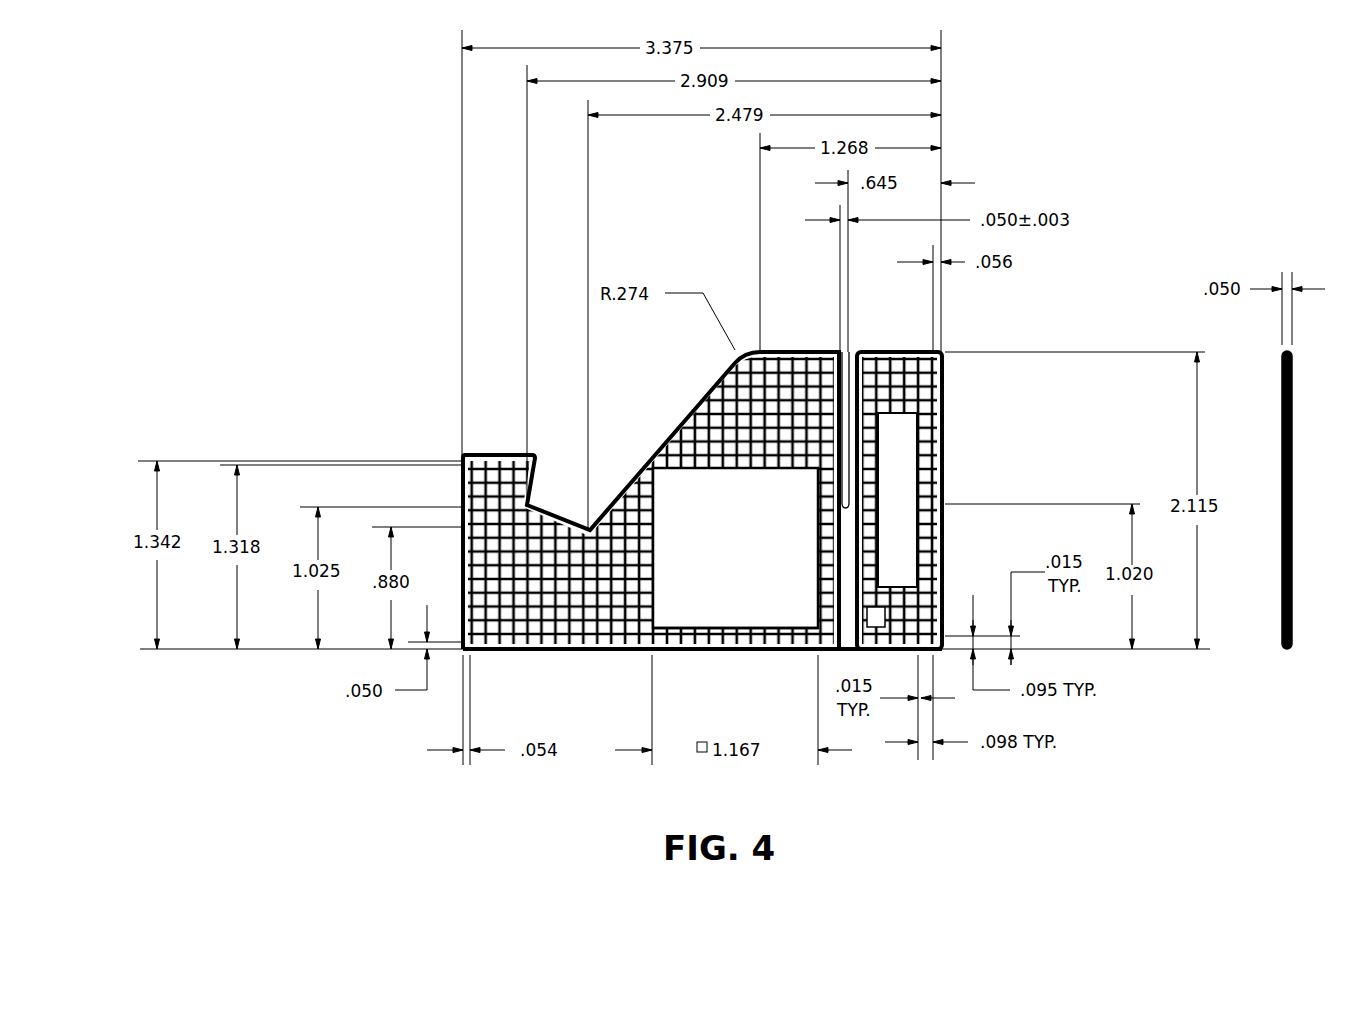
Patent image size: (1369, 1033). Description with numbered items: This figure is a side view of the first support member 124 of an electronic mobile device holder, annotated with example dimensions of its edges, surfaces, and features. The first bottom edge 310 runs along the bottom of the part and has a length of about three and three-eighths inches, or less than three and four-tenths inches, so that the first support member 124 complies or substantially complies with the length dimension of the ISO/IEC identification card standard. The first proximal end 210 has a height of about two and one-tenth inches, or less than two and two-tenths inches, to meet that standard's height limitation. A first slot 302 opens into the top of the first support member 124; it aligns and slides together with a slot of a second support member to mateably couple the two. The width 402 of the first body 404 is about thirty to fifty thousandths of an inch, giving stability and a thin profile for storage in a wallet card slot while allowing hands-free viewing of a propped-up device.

The first support member 124 is at (587, 632).
The first body 404 is at (667, 632).
The first bottom edge 310 is at (742, 652).
The first slot 302 is at (840, 350).
The first proximal end 210 is at (943, 437).
The width 402 is at (1287, 662).